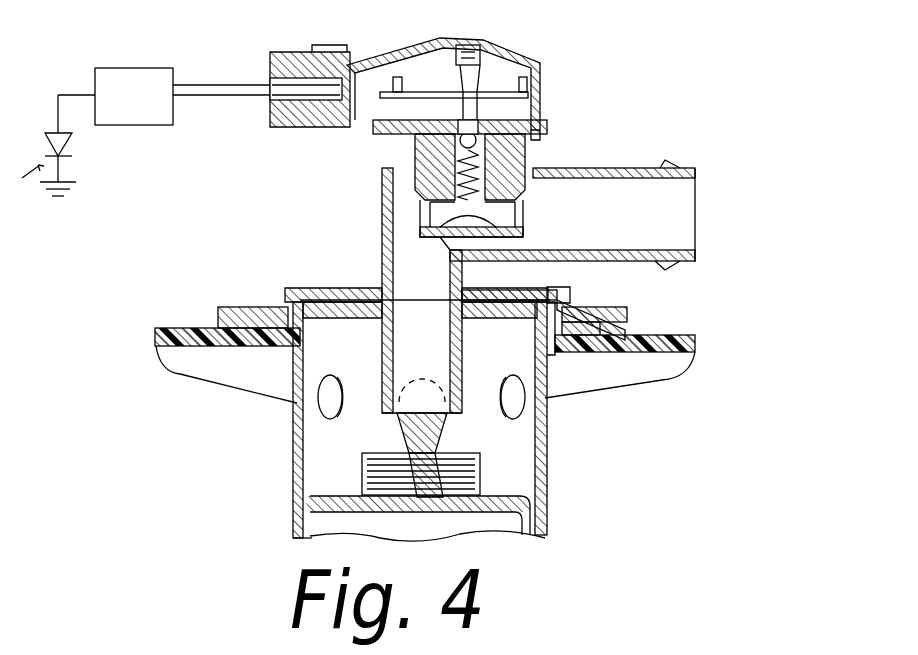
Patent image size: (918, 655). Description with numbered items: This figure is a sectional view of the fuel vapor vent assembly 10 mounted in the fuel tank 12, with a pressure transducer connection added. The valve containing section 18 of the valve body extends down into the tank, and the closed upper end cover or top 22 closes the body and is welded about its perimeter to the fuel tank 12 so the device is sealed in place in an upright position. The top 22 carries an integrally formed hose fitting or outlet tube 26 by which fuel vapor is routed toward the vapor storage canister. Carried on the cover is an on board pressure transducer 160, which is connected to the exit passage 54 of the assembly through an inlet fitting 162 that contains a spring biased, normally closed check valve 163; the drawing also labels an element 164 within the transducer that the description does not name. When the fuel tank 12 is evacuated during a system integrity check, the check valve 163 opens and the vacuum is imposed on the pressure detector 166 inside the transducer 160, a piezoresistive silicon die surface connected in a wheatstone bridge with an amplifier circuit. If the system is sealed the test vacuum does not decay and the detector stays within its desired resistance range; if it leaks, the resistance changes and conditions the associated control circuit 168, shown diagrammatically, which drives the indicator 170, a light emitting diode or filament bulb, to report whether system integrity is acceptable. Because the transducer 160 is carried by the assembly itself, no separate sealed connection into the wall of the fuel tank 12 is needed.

The control circuit 168 is at (110, 80).
The indicator 170 is at (62, 146).
The pressure transducer 160 is at (556, 70).
The pressure detector 166 is at (423, 60).
The sensor / valve stem 164 is at (470, 138).
The check valve 163 is at (432, 140).
The inlet fitting 162 is at (528, 148).
The outlet tube 26 is at (630, 168).
The exit passage 54 is at (595, 228).
The top 22 is at (308, 290).
The fuel tank 12 is at (697, 345).
The fuel vapor vent assembly 10 is at (556, 452).
The valve containing section 18 is at (296, 446).